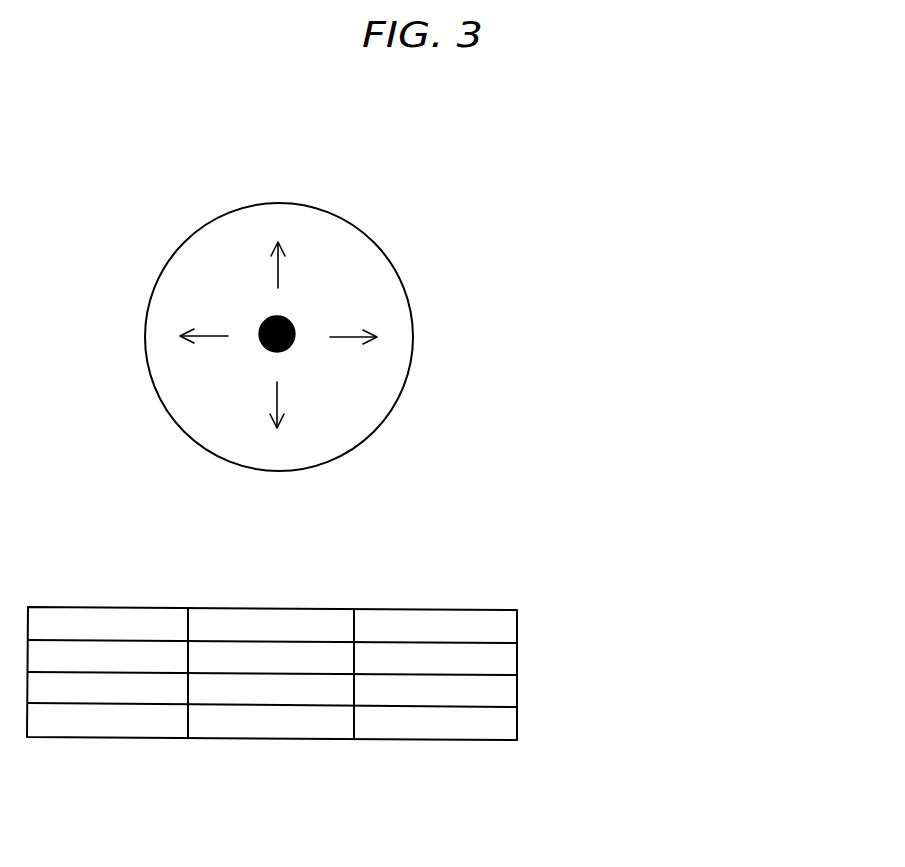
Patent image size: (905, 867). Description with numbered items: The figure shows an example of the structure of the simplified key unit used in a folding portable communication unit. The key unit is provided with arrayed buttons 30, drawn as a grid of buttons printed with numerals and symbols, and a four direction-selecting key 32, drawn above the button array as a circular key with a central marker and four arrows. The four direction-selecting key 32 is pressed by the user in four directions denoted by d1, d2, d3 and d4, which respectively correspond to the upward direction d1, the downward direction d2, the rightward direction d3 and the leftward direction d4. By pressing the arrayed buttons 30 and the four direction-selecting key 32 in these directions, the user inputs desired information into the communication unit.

The four direction-selecting key 32 is at (378, 219).
The arrayed buttons 30 is at (469, 603).
The upward direction d1 is at (276, 270).
The downward direction d2 is at (278, 398).
The rightward direction d3 is at (345, 338).
The leftward direction d4 is at (210, 338).